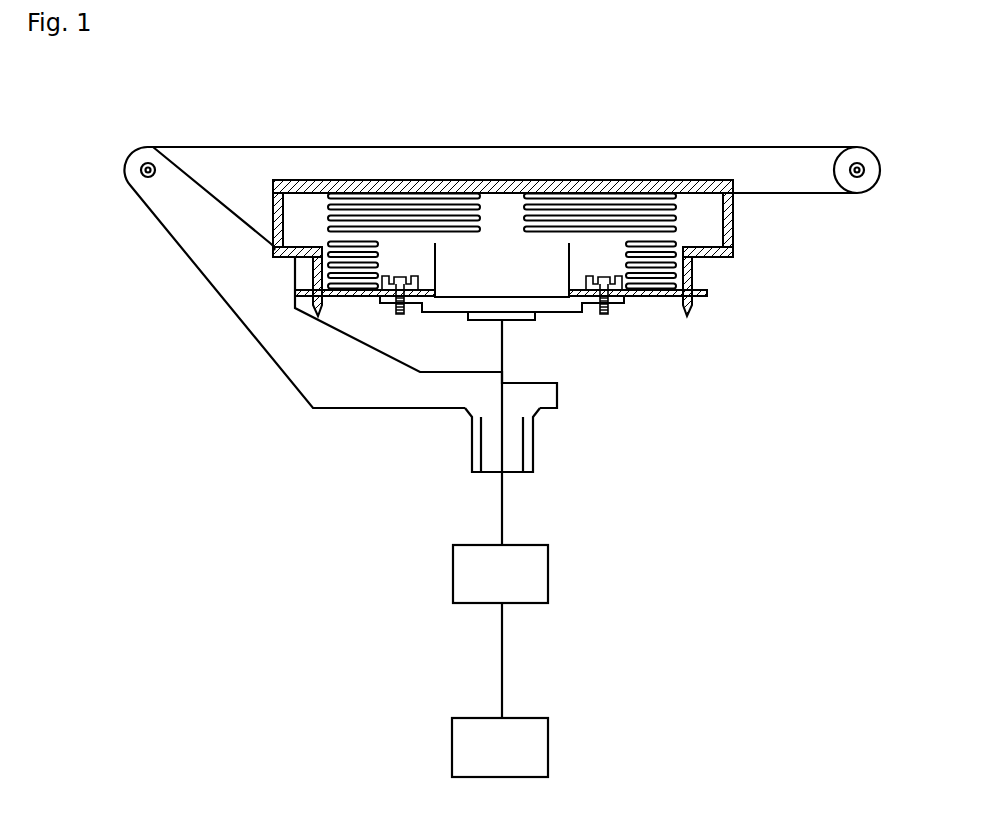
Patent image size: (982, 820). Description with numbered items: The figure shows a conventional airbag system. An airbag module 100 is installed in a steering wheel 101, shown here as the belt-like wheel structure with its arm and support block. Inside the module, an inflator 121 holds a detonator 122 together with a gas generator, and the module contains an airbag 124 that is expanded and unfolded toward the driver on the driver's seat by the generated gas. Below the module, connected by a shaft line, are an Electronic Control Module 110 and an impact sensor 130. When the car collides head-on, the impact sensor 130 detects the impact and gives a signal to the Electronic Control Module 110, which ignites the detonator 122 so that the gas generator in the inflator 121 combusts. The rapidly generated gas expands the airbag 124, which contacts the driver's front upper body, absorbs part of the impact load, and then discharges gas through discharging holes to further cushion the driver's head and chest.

The airbag module 100 is at (367, 308).
The steering wheel 101 is at (778, 148).
The Electronic Control Module (ECM) 110 is at (550, 572).
The inflator 121 is at (468, 276).
The detonator 122 is at (483, 320).
The airbag 124 is at (498, 207).
The impact sensor 130 is at (550, 747).